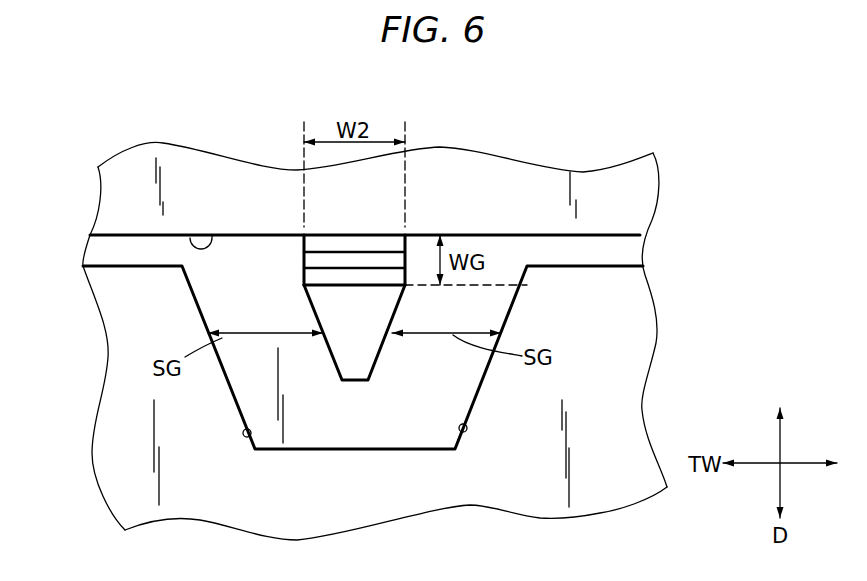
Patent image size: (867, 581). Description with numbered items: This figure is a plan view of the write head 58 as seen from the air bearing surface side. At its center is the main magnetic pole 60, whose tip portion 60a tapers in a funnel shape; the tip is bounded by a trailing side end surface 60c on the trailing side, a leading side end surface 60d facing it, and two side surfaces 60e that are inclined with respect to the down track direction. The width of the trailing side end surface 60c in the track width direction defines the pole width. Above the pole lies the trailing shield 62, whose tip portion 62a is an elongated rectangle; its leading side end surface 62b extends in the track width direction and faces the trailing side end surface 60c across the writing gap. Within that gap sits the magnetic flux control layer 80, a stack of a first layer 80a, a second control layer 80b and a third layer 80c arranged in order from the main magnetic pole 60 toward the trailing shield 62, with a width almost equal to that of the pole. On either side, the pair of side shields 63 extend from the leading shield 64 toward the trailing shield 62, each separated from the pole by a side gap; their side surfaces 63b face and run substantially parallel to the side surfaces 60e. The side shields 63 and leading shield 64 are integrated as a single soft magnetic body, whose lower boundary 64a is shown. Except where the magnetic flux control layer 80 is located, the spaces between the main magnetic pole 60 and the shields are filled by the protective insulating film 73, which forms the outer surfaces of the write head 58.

The write head 58 is at (92, 498).
The main magnetic pole 60 is at (372, 365).
The tip portion 60a is at (343, 348).
The trailing side end surface 60c is at (340, 285).
The leading side end surface 60d is at (352, 382).
The side surfaces 60e is at (331, 353).
The trailing shield 62 is at (615, 172).
The tip portion 62a is at (267, 165).
The leading side end surface 62b is at (190, 238).
The side shields 63 is at (117, 367).
The side surfaces 63b is at (247, 436).
The leading shield 64 is at (435, 487).
The lower surface of lower layer 64a is at (246, 513).
The protective insulating film 73 is at (618, 248).
The magnetic flux control layer 80 is at (547, 110).
The first layer 80a is at (390, 275).
The second control layer 80b is at (357, 263).
The third layer 80c is at (315, 243).